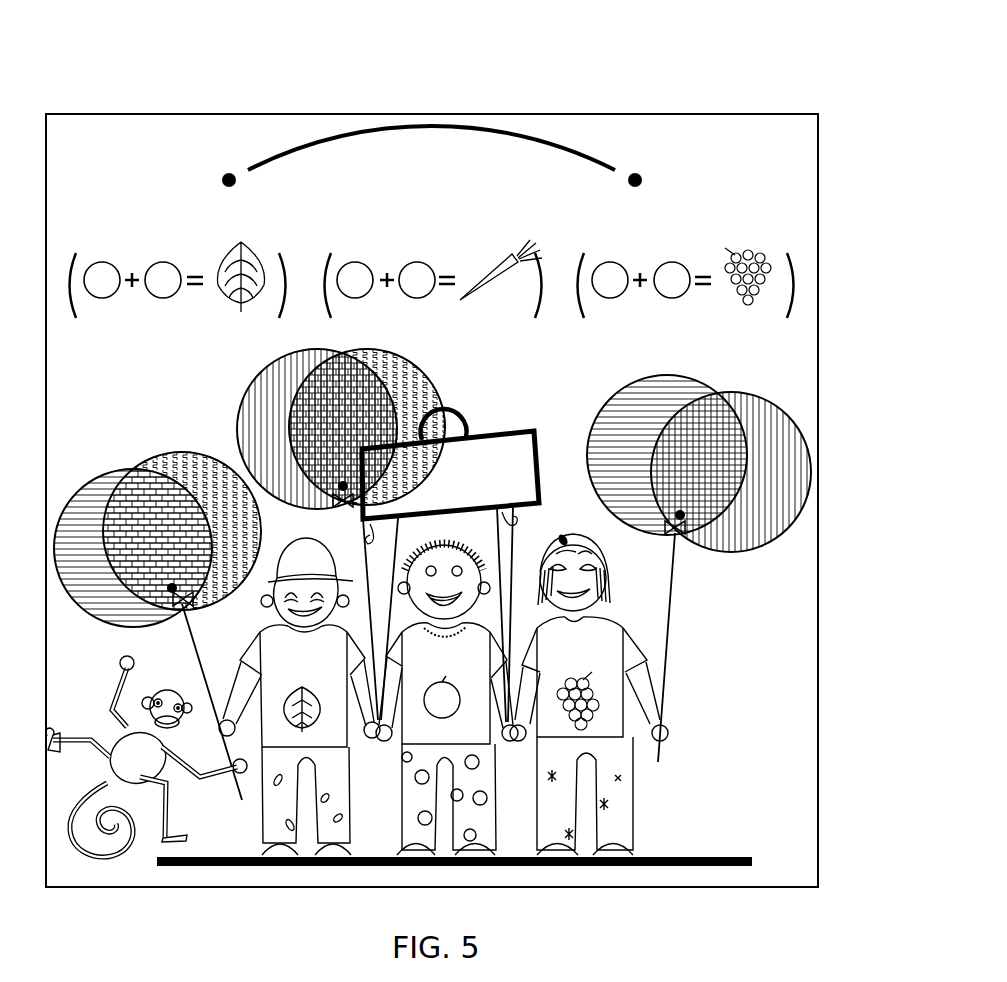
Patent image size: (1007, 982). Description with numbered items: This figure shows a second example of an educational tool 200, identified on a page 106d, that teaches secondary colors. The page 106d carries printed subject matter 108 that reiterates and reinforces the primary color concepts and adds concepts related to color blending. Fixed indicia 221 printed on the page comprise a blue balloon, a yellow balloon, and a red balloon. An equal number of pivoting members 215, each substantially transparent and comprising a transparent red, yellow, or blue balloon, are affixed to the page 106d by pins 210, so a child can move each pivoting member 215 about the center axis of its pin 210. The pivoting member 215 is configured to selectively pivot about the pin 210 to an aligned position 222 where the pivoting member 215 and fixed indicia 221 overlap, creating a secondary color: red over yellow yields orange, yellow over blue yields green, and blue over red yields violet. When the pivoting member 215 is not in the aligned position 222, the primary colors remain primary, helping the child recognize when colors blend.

The educational tool 200 is at (843, 48).
The printed subject matter 108 is at (673, 110).
The page 106d is at (752, 846).
The pin 210 is at (179, 606).
The pivoting member 215 is at (241, 410).
The fixed indicia 221 is at (99, 618).
The aligned position 222 is at (138, 478).